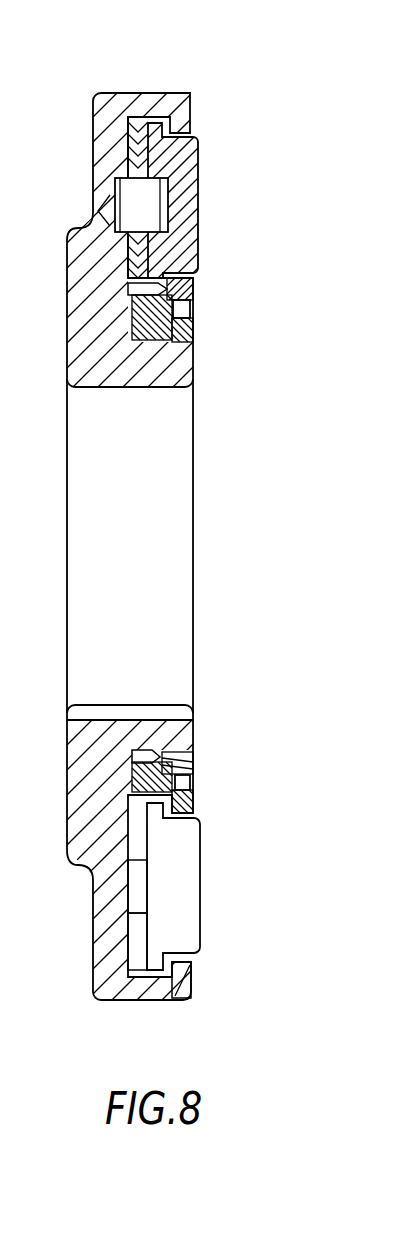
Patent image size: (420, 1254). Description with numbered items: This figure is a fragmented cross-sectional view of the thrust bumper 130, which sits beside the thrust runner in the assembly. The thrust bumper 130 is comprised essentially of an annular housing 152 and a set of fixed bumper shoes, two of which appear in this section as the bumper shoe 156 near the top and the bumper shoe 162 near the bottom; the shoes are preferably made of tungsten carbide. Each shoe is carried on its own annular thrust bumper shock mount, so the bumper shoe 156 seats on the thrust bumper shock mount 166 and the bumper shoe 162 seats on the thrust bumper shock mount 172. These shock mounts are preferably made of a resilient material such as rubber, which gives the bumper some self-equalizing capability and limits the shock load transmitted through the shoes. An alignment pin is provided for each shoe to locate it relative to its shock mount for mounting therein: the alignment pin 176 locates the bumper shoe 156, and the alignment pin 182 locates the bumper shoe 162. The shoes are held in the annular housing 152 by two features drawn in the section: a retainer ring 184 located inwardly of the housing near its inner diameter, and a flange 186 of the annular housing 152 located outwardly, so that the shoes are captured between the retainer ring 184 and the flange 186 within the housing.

The thrust bumper 130 is at (135, 68).
The annular housing 152 is at (106, 110).
The bumper shoe 156 is at (188, 172).
The thrust bumper shock mount 166 is at (137, 258).
The alignment pin 176 is at (127, 193).
The retainer ring 184 is at (188, 763).
The alignment pin 182 is at (140, 872).
The bumper shoe 162 is at (183, 900).
The thrust bumper shock mount 172 is at (140, 930).
The flange 186 is at (183, 982).